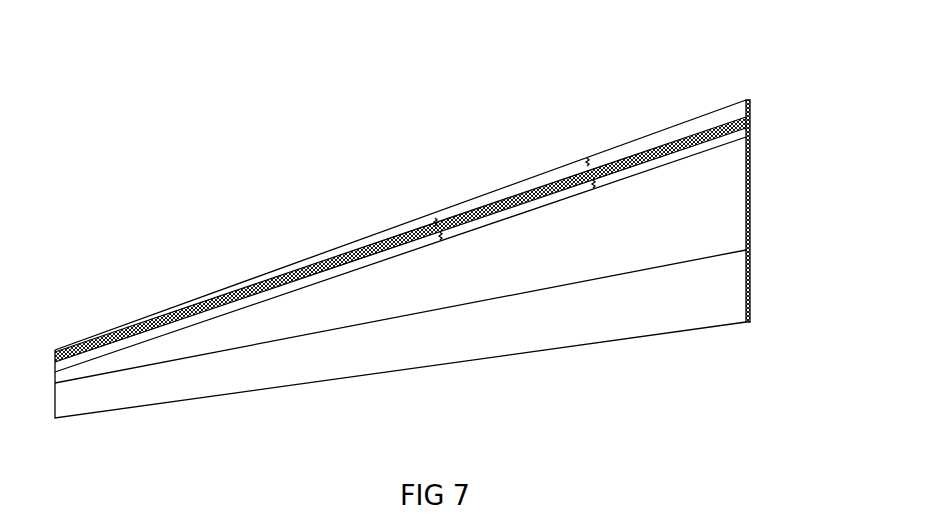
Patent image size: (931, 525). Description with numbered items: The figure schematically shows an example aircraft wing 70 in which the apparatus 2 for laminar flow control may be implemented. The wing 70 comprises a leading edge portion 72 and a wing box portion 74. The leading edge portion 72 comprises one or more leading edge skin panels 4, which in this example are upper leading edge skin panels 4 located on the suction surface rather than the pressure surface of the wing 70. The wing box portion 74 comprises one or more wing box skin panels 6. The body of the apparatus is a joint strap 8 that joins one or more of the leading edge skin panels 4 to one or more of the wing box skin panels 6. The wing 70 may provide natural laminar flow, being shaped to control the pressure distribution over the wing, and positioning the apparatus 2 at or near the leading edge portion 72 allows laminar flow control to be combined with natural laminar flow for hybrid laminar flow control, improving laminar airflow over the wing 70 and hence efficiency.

The aircraft wing 70 is at (469, 100).
The leading edge portion 72 is at (602, 152).
The leading edge skin panel 4 is at (692, 127).
The apparatus for laminar flow control 2 is at (432, 197).
The joint strap 8 is at (717, 133).
The wing box skin panel 6 is at (733, 180).
The wing box portion 74 is at (723, 231).